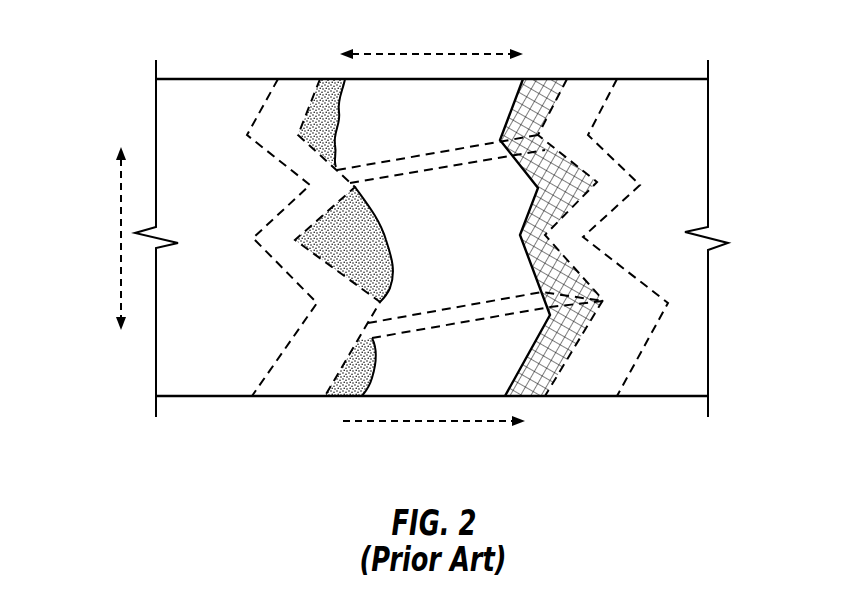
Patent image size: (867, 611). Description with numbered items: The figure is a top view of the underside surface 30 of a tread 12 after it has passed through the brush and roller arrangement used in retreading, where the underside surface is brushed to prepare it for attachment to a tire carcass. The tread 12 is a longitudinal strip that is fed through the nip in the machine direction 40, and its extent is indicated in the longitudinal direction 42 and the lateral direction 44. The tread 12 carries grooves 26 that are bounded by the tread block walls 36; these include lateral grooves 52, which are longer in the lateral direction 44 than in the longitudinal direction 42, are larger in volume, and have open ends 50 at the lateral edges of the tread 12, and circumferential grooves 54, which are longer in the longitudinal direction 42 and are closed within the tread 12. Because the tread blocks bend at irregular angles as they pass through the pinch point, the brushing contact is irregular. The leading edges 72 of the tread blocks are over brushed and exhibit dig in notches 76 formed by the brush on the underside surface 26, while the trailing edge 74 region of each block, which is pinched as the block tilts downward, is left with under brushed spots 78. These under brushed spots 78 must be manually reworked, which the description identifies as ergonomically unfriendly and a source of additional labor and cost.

The tread 12 is at (667, 383).
The grooves 26 is at (308, 353).
The underside surface 30 is at (684, 212).
The tread block walls 36 is at (626, 363).
The machine direction 40 is at (432, 423).
The longitudinal direction 42 is at (430, 53).
The lateral direction 44 is at (122, 232).
The open ends 50 is at (293, 400).
The lateral grooves 52 is at (593, 107).
The circumferential grooves 54 is at (452, 322).
The leading edges 72 is at (560, 155).
The trailing edge 74 is at (307, 148).
The dig in notches 76 is at (553, 182).
The under brushed spots 78 is at (330, 243).